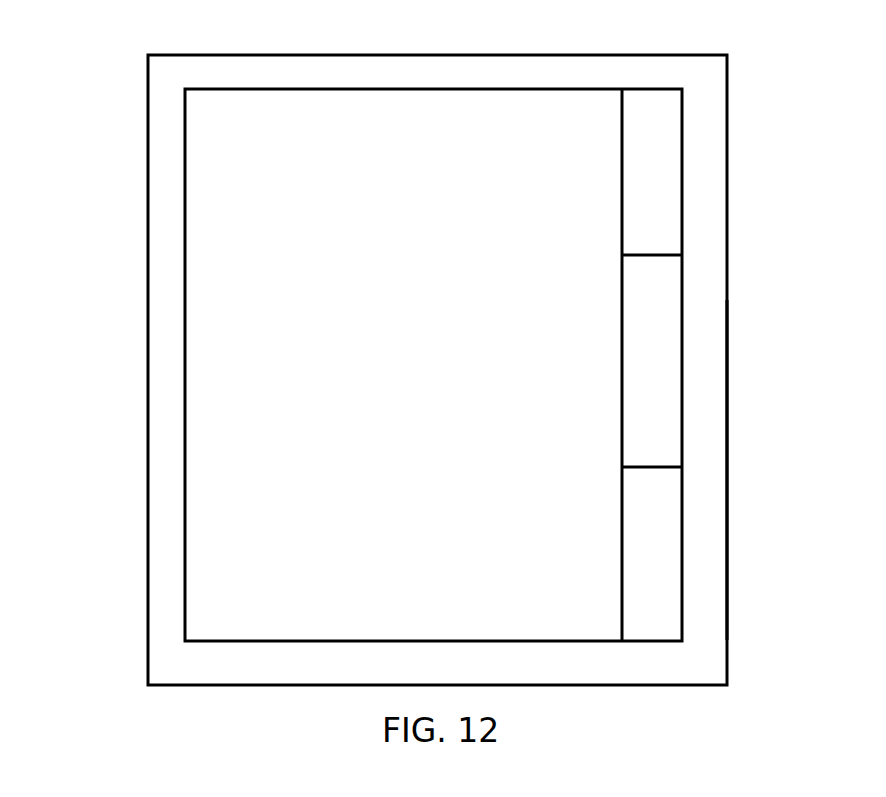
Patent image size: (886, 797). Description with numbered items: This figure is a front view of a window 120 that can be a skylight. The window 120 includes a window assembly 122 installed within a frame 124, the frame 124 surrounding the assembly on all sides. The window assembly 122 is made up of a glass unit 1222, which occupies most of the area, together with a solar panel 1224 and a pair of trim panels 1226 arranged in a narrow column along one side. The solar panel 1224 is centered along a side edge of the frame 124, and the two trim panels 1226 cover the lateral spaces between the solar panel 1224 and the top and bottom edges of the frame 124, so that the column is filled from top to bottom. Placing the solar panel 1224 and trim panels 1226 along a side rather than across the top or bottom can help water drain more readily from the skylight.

The window 120 is at (765, 38).
The window assembly 122 is at (186, 263).
The frame 124 is at (710, 500).
The glass unit 1222 is at (415, 407).
The solar panel 1224 is at (648, 368).
The trim panels 1226 is at (640, 193).